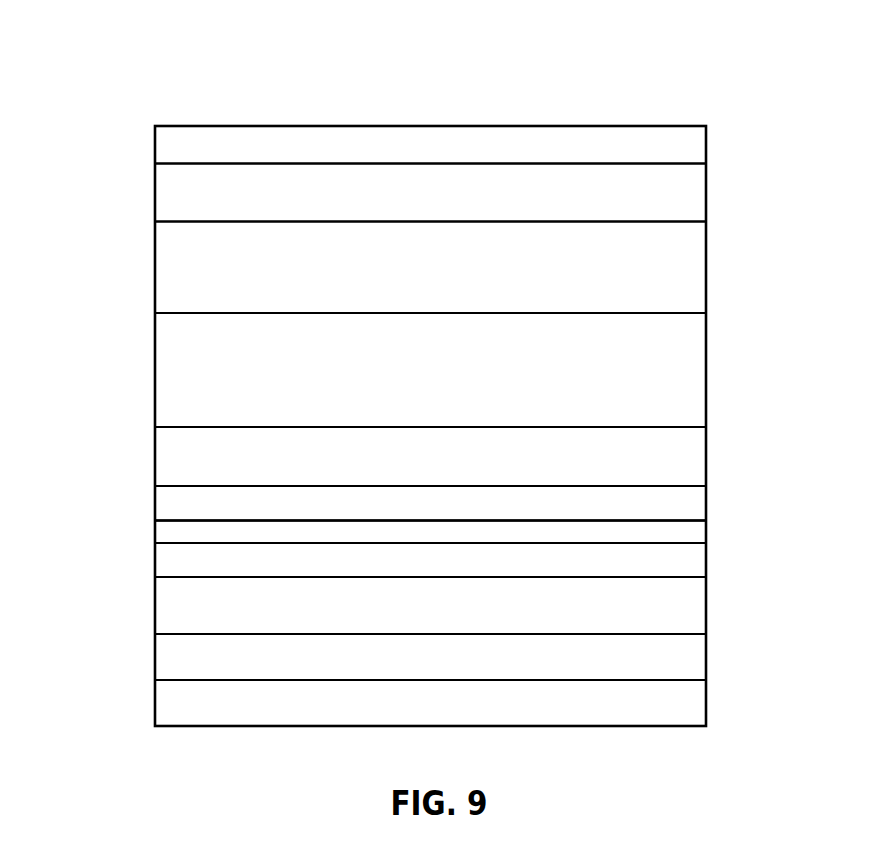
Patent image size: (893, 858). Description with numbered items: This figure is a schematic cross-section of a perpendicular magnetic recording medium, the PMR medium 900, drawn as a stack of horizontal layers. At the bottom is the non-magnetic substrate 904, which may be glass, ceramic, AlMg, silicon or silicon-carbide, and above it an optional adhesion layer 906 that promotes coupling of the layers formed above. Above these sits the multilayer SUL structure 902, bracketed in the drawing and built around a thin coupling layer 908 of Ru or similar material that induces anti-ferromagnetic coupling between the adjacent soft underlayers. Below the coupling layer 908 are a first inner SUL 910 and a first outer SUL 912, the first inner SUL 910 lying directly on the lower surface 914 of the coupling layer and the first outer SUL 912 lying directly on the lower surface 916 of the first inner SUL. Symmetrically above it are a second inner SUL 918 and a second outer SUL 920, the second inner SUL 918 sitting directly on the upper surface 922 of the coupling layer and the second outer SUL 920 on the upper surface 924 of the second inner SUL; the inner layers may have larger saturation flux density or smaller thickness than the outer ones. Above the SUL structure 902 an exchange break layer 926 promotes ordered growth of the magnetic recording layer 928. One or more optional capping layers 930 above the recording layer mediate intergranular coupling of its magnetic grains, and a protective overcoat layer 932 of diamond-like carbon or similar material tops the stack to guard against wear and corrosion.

The PMR medium 900 is at (231, 86).
The multilayer SUL structure 902 is at (714, 427).
The non-magnetic substrate 904 is at (410, 714).
The adhesion layer 906 is at (410, 668).
The coupling layer 908 is at (162, 528).
The first inner SUL 910 is at (410, 570).
The first outer SUL 912 is at (410, 617).
The lower surface of the coupling layer 914 is at (170, 546).
The lower surface of the first inner SUL 916 is at (170, 583).
The second inner SUL 918 is at (410, 513).
The second outer SUL 920 is at (410, 468).
The upper surface of the coupling layer 922 is at (174, 508).
The upper surface of the second inner SUL 924 is at (174, 473).
The exchange break layer 926 is at (410, 381).
The magnetic recording layer 928 is at (410, 277).
The capping layer 930 is at (410, 202).
The protective overcoat layer 932 is at (410, 157).